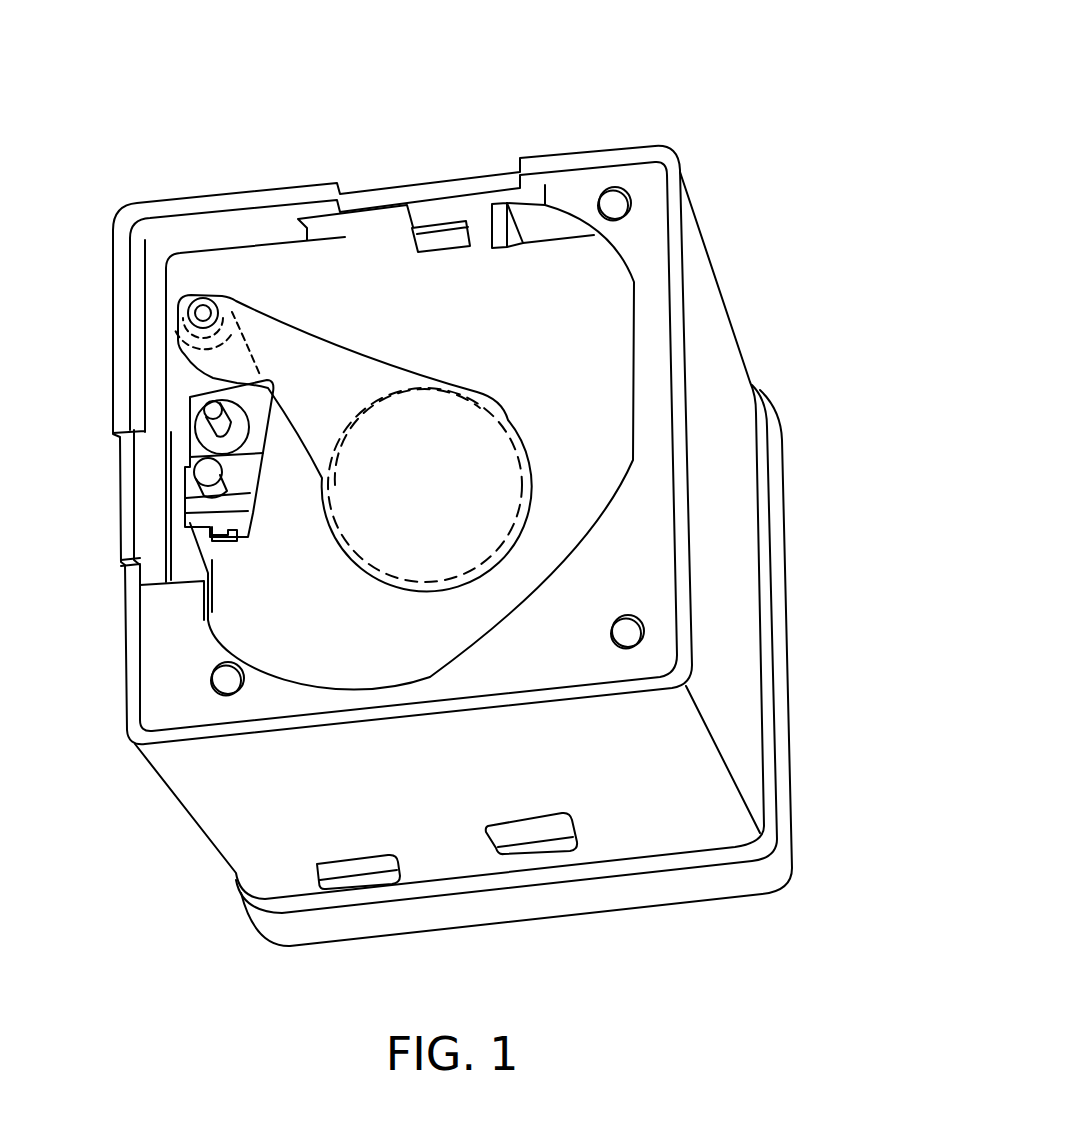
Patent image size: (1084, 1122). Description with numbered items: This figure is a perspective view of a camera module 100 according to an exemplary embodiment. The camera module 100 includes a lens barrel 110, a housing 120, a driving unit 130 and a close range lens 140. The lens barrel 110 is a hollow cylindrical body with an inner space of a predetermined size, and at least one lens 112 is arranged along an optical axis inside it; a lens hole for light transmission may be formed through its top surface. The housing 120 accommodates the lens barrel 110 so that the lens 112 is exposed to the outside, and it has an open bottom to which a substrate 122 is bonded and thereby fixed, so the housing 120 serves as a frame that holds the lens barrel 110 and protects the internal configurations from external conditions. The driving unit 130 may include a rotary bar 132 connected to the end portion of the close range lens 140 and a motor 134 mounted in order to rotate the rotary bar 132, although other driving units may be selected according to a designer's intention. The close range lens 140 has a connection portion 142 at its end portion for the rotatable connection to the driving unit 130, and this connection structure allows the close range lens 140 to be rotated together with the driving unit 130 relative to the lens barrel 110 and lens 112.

The camera module 100 is at (403, 28).
The lens barrel 110 is at (457, 302).
The lens 112 is at (487, 440).
The housing 120 is at (698, 294).
The substrate 122 is at (780, 653).
The driving unit 130 is at (93, 112).
The rotary bar 132 is at (203, 313).
The motor 134 is at (180, 353).
The close range lens 140 is at (335, 376).
The connection portion 142 is at (222, 300).